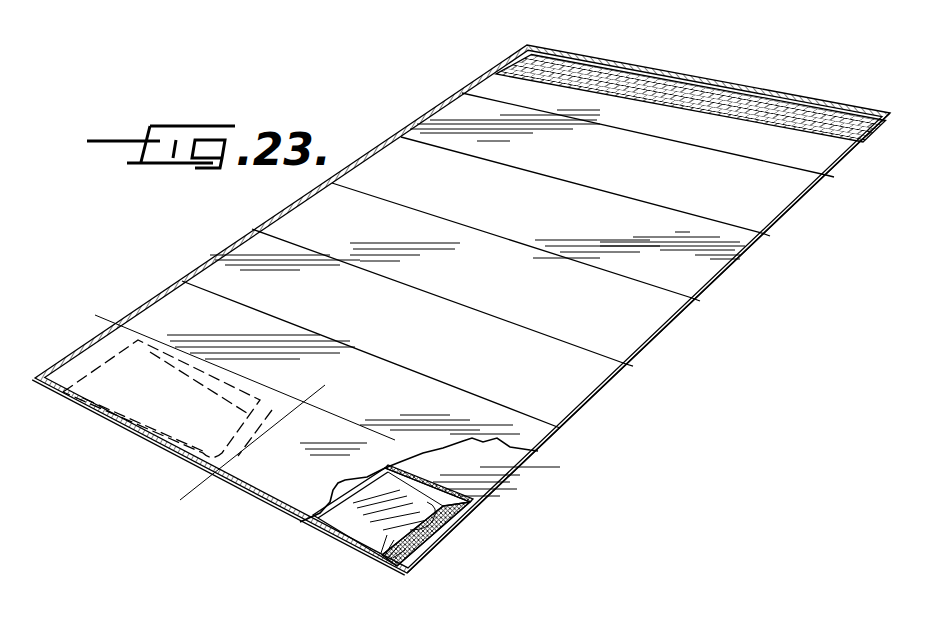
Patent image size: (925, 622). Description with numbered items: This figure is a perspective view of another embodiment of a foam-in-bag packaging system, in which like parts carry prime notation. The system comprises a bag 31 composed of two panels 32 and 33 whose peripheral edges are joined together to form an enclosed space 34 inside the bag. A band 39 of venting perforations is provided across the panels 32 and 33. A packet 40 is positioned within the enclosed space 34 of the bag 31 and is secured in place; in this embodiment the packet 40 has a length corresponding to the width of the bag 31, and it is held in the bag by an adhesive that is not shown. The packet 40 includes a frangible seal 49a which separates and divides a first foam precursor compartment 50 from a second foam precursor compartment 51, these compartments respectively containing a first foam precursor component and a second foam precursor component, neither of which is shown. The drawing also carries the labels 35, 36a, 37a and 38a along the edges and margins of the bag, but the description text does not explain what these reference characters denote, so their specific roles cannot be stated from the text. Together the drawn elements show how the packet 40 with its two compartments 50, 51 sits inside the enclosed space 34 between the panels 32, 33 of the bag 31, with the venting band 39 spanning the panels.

The bag 31 is at (663, 347).
The panel 32 is at (480, 488).
The panel 33 is at (494, 291).
The enclosed space 34 is at (507, 449).
The right side edge 35 is at (617, 376).
The upper side binding edge 36a is at (213, 259).
The lower side binding edge 37a is at (195, 456).
The end binding edge 38a is at (750, 88).
The band of venting perforations 39 is at (642, 82).
The packet 40 is at (346, 531).
The frangible seal 49a is at (272, 418).
The first foam precursor compartment 50 is at (144, 336).
The second foam precursor compartment 51 is at (372, 492).